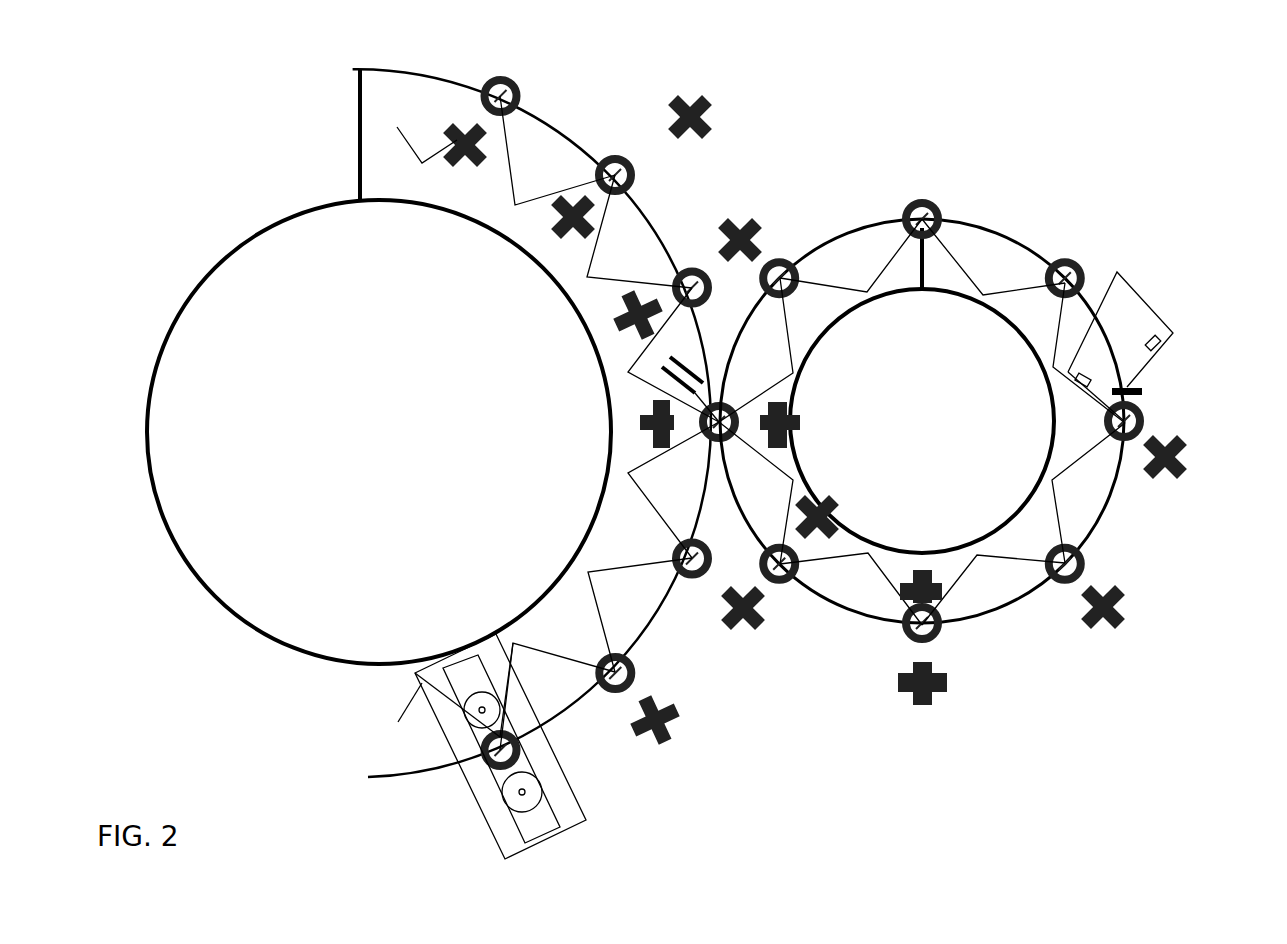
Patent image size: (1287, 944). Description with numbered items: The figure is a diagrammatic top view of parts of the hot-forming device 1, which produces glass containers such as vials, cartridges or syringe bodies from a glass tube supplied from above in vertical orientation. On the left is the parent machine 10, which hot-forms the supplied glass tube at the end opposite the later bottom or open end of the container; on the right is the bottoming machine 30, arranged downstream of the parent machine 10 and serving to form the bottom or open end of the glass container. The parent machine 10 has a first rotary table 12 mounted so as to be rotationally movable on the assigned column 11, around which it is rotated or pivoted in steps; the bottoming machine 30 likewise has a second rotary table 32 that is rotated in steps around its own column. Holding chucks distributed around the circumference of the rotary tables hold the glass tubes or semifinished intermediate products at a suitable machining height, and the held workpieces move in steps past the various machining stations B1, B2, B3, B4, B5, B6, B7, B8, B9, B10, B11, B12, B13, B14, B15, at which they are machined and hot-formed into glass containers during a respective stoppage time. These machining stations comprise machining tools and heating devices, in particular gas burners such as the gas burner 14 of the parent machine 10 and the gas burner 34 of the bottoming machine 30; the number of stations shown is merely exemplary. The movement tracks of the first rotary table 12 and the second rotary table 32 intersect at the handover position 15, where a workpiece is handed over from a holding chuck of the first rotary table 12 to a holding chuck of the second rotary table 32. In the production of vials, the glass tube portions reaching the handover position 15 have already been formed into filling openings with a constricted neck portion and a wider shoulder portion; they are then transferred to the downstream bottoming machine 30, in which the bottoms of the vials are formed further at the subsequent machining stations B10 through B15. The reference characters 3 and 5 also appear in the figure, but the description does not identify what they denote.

The parent machine 10 is at (196, 68).
The column 11 is at (198, 283).
The first rotary table 12 is at (435, 75).
The gas burner 14 is at (677, 97).
The handover position 15 is at (712, 425).
The bottoming machine 30 is at (1203, 124).
The second rotary table 32 is at (980, 228).
The inner wheel 3 is at (952, 283).
The hot-forming device 1 is at (1095, 243).
The gas burner 34 is at (1177, 463).
The rotation direction 5 is at (1022, 530).
The machining station B1 is at (448, 152).
The machining station B2 is at (559, 218).
The machining station B3 is at (728, 94).
The machining station B4 is at (624, 318).
The machining station B5 is at (744, 239).
The machining station B6 is at (633, 424).
The machining station B7 is at (733, 567).
The machining station B8 is at (743, 620).
The machining station B9 is at (664, 725).
The machining station B10 is at (797, 425).
The machining station B11 is at (827, 516).
The machining station B12 is at (922, 698).
The machining station B13 is at (920, 573).
The machining station B14 is at (1111, 612).
The machining station B15 is at (1173, 462).